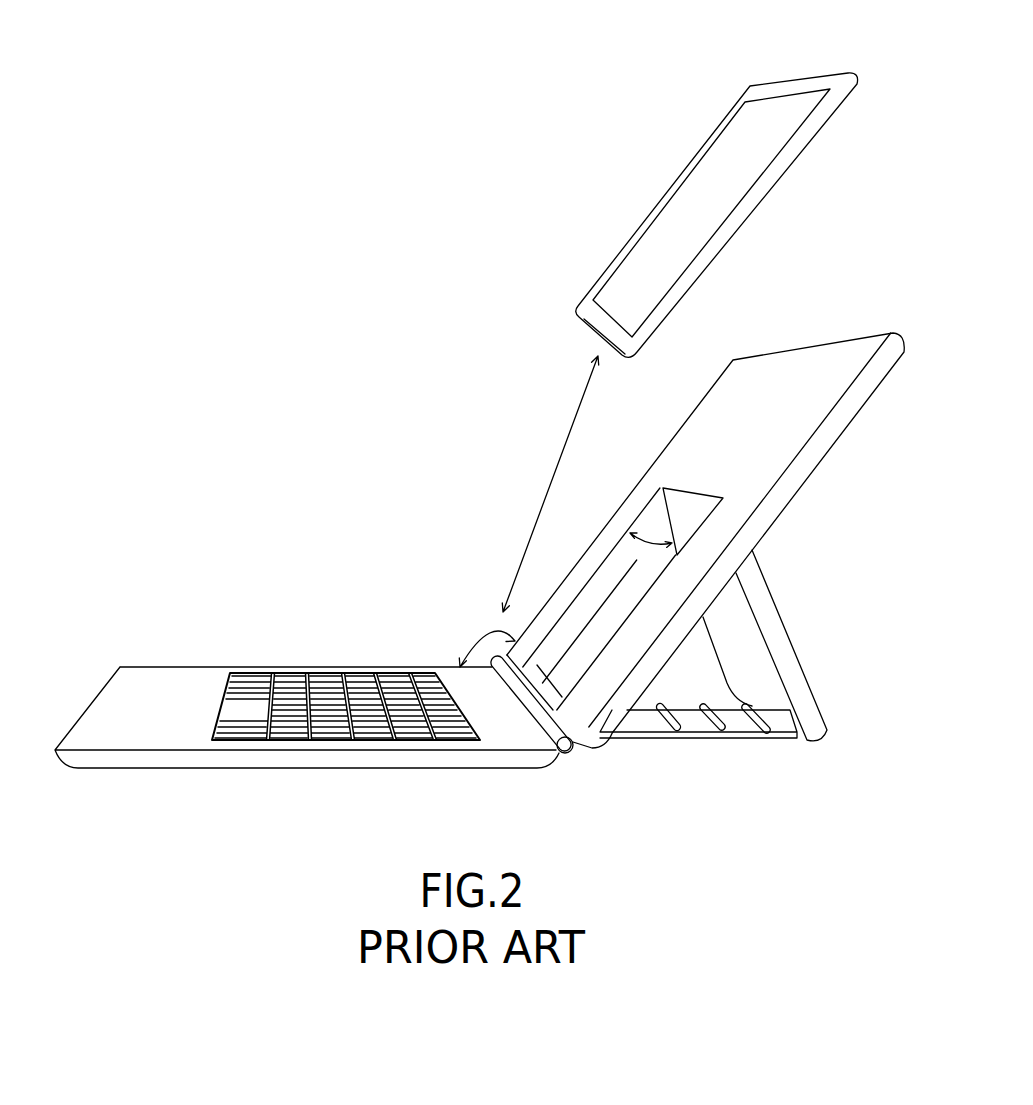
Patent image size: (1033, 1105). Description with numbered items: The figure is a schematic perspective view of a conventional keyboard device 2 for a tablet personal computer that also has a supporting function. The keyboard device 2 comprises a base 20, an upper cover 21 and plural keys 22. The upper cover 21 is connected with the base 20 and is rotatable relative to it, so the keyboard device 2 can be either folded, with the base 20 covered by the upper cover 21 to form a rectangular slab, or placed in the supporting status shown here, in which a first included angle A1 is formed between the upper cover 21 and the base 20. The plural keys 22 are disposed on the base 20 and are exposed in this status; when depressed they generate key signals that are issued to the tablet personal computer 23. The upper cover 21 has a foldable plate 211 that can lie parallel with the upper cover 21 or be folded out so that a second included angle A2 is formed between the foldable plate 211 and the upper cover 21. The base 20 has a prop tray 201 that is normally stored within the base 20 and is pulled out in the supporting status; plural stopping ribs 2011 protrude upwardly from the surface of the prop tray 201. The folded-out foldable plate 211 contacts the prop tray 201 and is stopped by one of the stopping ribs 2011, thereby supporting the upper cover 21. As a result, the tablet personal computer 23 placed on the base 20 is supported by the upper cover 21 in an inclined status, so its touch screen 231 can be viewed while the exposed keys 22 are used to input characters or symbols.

The keyboard device 2 is at (505, 786).
The base 20 is at (108, 708).
The plural keys 22 is at (285, 670).
The upper cover 21 is at (795, 365).
The foldable plate 211 is at (768, 613).
The prop tray 201 is at (648, 723).
The stopping ribs 2011 is at (760, 710).
The tablet personal computer 23 is at (695, 160).
The touch screen 231 is at (655, 248).
The first included angle A1 is at (477, 646).
The second included angle A2 is at (668, 490).